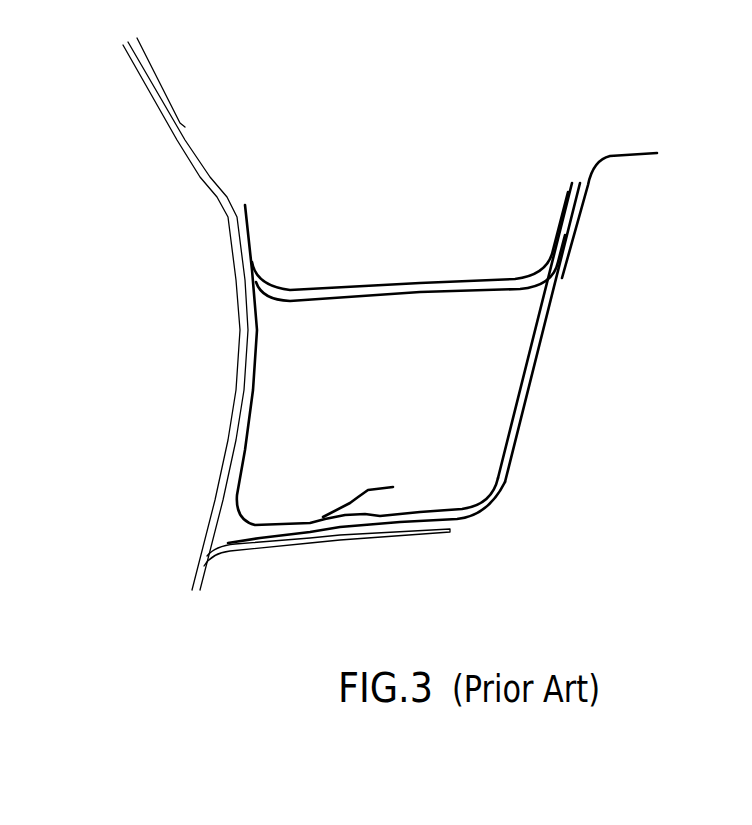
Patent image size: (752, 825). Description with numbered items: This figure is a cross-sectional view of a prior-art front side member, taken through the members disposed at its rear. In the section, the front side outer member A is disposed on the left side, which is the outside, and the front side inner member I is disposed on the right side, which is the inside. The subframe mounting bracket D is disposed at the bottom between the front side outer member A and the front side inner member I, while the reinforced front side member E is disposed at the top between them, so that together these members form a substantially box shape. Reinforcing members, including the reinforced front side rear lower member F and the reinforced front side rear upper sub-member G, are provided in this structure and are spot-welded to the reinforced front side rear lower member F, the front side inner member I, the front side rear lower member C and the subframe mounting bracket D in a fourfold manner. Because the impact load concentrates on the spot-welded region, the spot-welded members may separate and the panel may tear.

The front side outer member A is at (146, 78).
The reinforced front side rear upper sub-member G is at (452, 280).
The reinforced front side member E is at (538, 274).
The front side rear lower member C is at (540, 331).
The front side inner member I is at (518, 436).
The reinforced front side rear lower member F is at (357, 500).
The subframe mounting bracket D is at (418, 532).